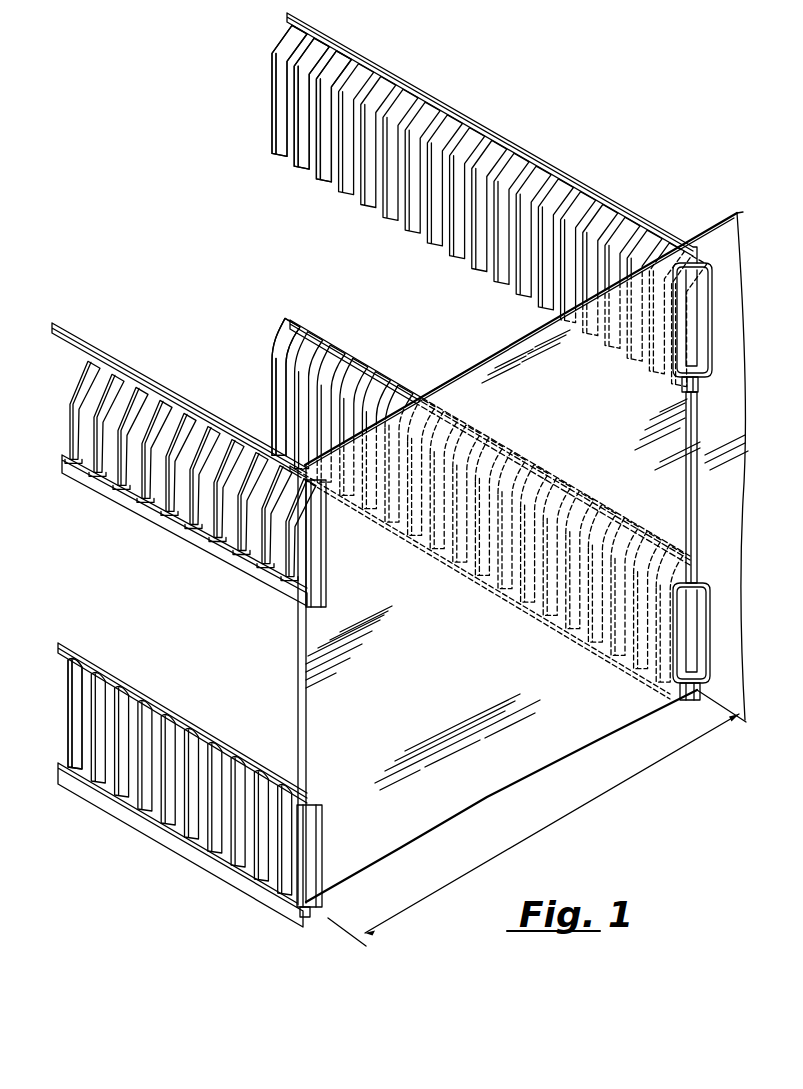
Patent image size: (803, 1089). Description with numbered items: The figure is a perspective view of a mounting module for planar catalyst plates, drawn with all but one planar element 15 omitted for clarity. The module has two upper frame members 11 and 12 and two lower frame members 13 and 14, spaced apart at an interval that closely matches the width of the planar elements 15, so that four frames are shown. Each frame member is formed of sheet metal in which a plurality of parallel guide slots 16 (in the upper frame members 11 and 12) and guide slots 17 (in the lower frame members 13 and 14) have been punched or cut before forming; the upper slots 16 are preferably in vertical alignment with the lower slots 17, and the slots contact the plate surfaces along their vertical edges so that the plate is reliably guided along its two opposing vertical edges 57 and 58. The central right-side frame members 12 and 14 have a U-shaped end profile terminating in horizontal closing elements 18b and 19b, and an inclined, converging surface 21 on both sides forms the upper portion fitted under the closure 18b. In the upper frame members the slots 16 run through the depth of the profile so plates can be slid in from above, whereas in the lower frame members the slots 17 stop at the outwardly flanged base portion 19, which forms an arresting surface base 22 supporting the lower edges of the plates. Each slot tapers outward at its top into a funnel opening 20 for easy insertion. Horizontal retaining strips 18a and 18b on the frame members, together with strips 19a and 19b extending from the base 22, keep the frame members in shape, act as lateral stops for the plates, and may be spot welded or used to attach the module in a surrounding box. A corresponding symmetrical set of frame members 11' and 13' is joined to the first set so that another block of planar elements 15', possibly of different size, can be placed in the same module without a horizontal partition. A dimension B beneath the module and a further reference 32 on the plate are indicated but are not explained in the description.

The upper frame member 11 is at (190, 432).
The symmetrical upper frame member 11' is at (710, 320).
The upper frame member 12 is at (263, 110).
The lower frame member 13 is at (180, 755).
The symmetrical lower frame member 13' is at (710, 633).
The lower frame member 14 is at (262, 378).
The planar element 15 is at (525, 557).
The planar element of another block 15' is at (707, 439).
The guide slot 16 is at (313, 172).
The guide slot 17 is at (290, 427).
The horizontal retaining strip 18a is at (80, 338).
The horizontal closing element 18b is at (455, 125).
The outwardly flanged base portion 19 is at (148, 518).
The strip 19a is at (324, 600).
The horizontal closing element 19b is at (684, 386).
The funnel opening 20 is at (295, 78).
The inclined converging surface 21 is at (308, 57).
The arresting surface base 22 is at (527, 607).
The plate top edge 32 is at (447, 385).
The vertical edge of planar element 57 is at (298, 672).
The vertical edge of planar element 58 is at (698, 531).
The width dimension B is at (567, 815).